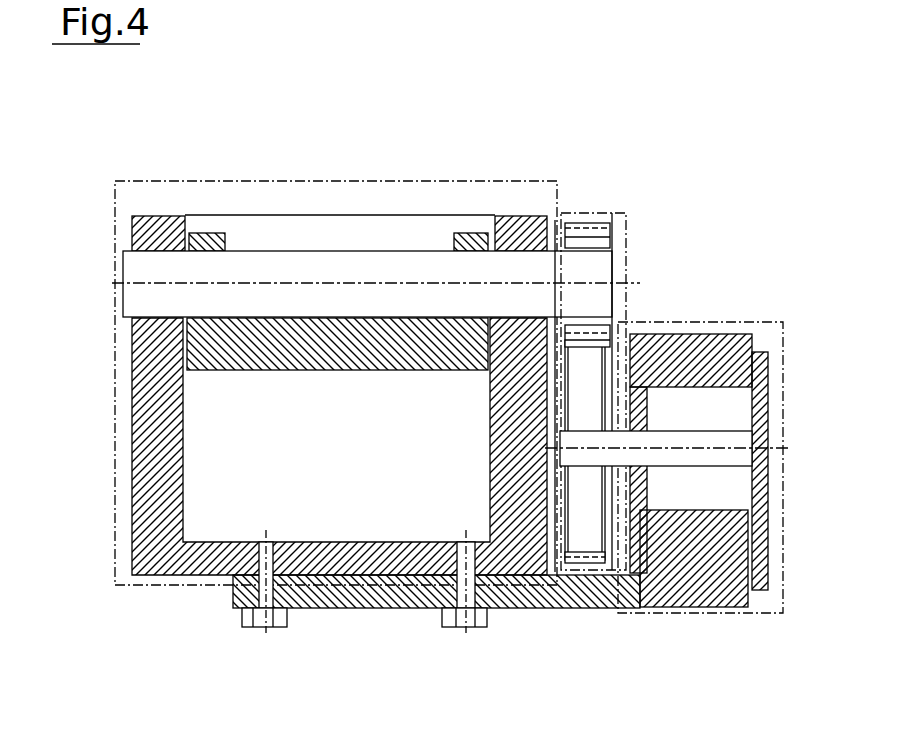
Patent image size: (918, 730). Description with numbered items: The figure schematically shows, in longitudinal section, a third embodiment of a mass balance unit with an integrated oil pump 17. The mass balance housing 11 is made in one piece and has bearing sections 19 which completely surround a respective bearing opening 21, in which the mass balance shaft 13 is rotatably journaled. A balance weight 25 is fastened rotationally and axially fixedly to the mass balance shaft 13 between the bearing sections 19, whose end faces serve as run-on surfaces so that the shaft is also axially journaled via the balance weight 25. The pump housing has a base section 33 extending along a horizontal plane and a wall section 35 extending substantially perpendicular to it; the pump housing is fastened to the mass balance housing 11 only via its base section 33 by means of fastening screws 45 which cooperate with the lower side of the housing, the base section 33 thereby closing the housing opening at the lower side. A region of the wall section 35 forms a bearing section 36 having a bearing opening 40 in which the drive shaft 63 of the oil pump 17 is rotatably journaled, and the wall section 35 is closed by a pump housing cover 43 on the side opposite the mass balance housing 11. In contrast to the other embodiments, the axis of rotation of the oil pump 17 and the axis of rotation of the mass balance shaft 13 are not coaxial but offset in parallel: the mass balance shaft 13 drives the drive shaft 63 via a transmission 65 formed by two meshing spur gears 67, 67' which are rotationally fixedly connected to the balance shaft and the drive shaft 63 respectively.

The mass balance housing 11 is at (160, 575).
The mass balance shaft 13 is at (360, 248).
The oil pump 17 is at (790, 352).
The bearing sections 19 is at (150, 214).
The bearing opening 21 is at (126, 324).
The balance weight 25 is at (218, 372).
The base section 33 is at (372, 608).
The wall section 35 is at (547, 358).
The bearing section 36 is at (642, 395).
The bearing opening 40 is at (630, 336).
The pump housing cover 43 is at (767, 527).
The fastening screws 45 is at (278, 620).
The drive shaft 63 is at (717, 467).
The transmission 65 is at (622, 210).
The spur gear 67 is at (627, 270).
The spur gear 67' is at (569, 616).